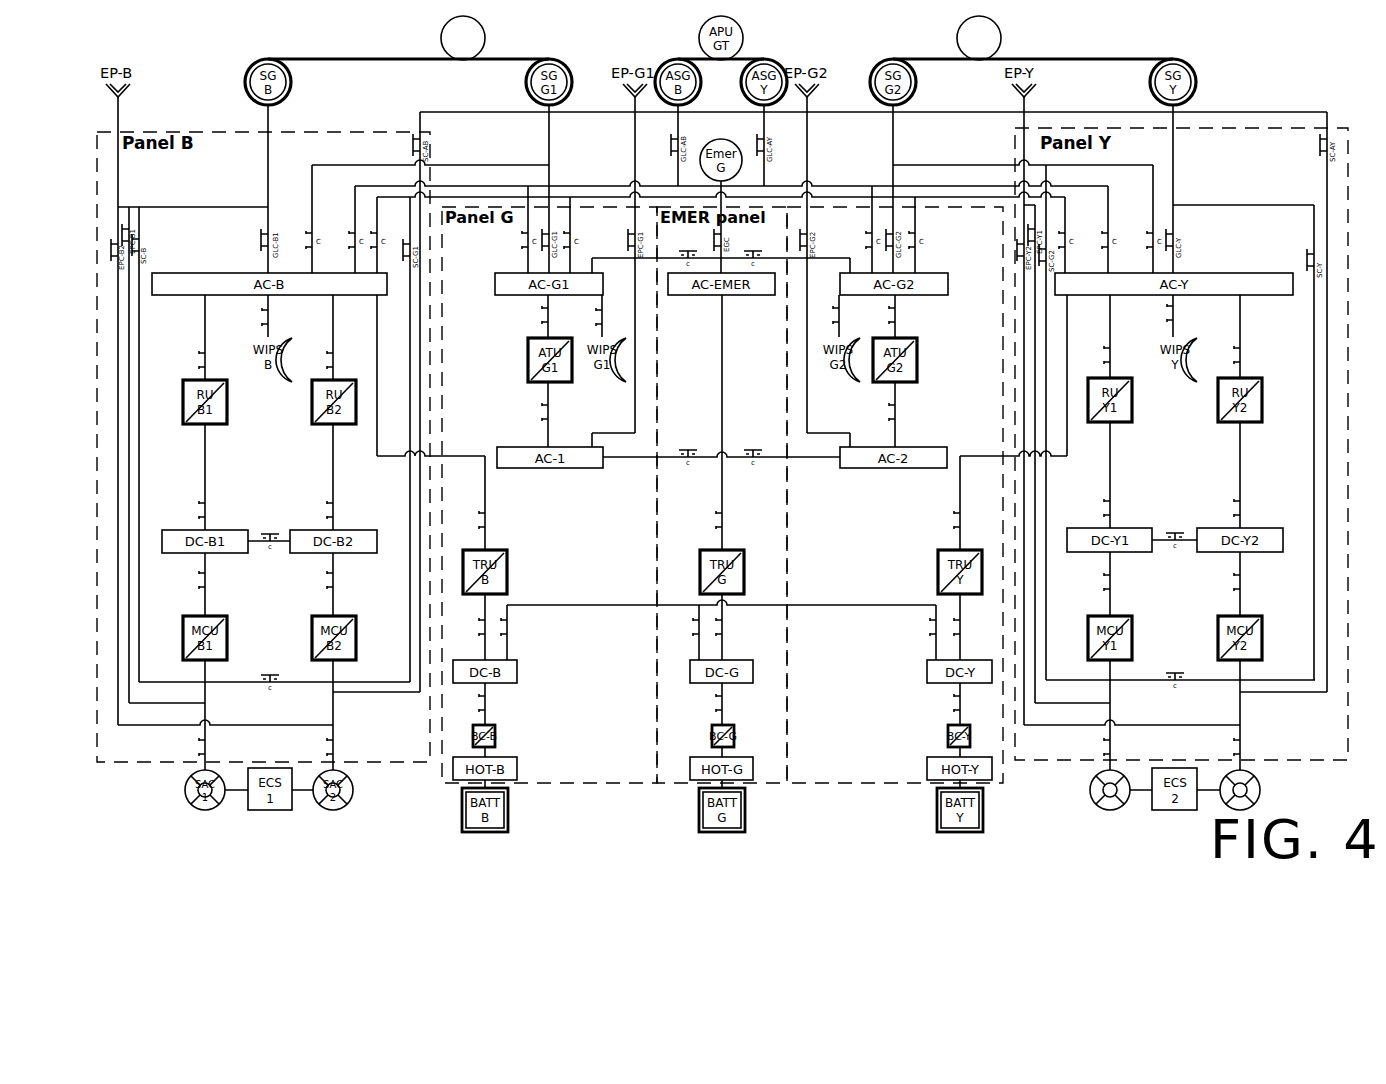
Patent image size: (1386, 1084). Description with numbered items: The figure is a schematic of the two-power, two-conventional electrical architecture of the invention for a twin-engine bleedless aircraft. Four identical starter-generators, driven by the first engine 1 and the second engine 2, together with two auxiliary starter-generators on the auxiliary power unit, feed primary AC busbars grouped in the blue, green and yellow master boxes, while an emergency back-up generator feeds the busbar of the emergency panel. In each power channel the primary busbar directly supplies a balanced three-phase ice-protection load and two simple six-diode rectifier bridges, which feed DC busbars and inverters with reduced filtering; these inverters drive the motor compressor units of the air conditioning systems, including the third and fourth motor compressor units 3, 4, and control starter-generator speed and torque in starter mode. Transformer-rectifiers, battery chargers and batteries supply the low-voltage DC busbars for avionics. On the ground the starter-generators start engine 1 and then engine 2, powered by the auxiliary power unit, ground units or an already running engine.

The engine 1 is at (463, 38).
The engine 2 is at (979, 38).
The motor compressor unit 3 is at (1110, 790).
The motor compressor unit 4 is at (1240, 790).